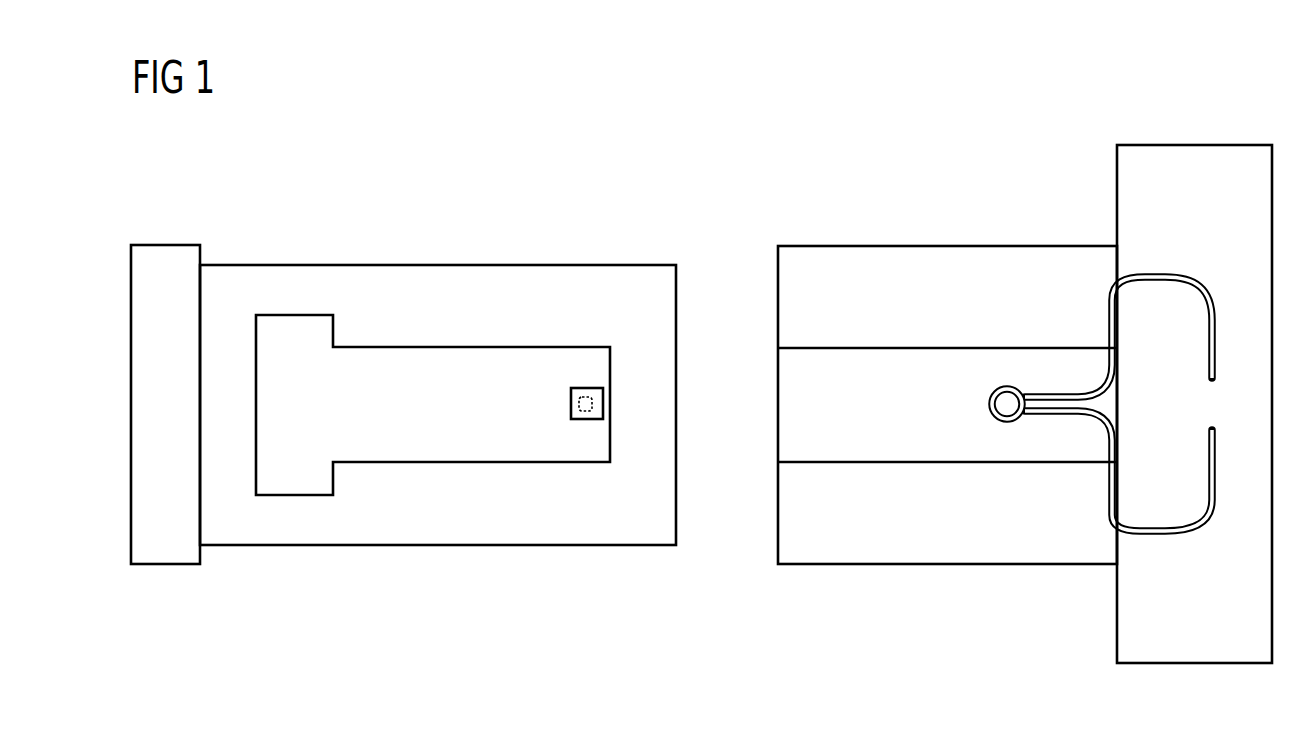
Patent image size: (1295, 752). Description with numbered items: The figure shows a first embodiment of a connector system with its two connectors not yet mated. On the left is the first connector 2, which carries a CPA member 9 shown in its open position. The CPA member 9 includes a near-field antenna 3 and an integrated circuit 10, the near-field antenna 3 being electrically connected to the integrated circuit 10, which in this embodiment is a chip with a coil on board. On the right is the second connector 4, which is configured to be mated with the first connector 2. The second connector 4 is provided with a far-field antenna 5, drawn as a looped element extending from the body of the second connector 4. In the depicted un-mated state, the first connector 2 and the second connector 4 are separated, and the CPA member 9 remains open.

The first device (module with circuit board) 2 is at (403, 449).
The contact element 3 is at (577, 419).
The second device (carrier with spring clip) 4 is at (1025, 418).
The spring contact clip 5 is at (1064, 393).
The circuit board 9 is at (312, 343).
The contact surface 10 is at (595, 389).